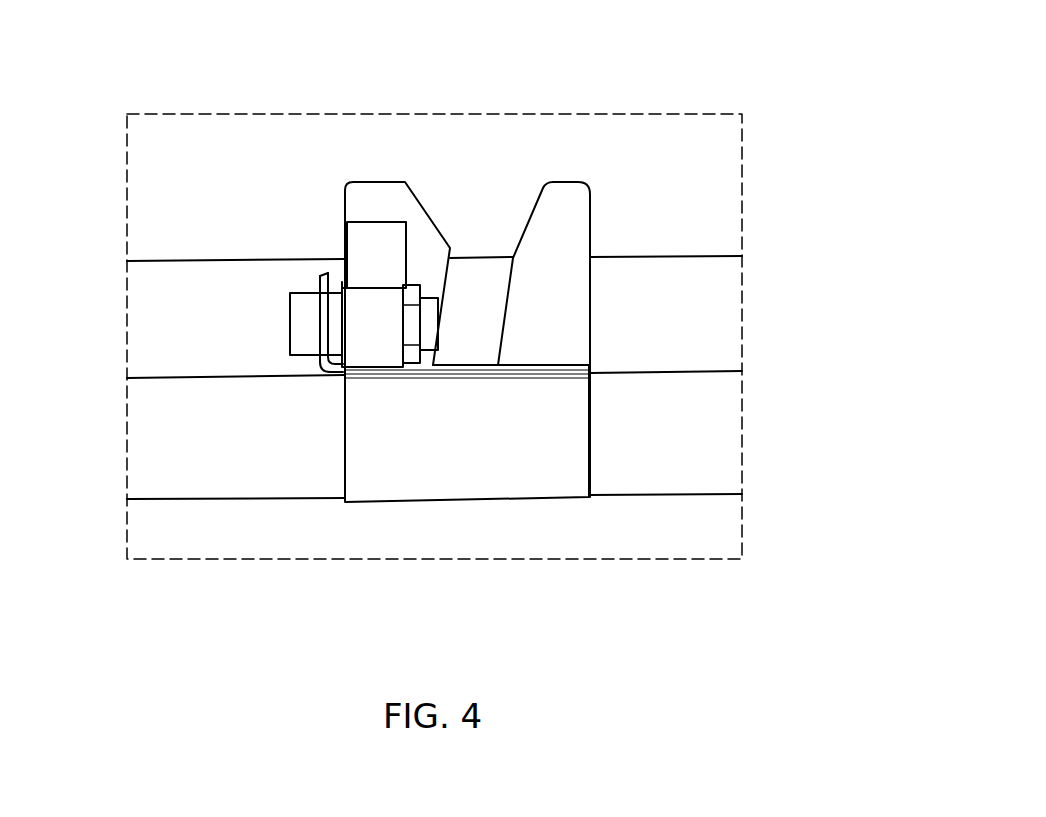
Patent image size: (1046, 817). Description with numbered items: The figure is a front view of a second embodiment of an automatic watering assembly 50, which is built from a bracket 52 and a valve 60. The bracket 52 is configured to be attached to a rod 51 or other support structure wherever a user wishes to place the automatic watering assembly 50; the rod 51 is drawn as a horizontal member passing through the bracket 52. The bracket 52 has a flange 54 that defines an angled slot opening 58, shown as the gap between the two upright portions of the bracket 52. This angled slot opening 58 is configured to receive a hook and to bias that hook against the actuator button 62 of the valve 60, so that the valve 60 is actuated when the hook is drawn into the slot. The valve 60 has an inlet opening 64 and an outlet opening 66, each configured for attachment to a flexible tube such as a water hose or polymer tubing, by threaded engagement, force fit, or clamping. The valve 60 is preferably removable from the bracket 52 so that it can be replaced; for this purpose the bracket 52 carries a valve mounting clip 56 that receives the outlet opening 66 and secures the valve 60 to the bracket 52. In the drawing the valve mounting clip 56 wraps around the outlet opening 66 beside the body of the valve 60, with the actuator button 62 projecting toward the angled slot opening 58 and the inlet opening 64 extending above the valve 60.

The automatic watering assembly 50 is at (643, 63).
The rod 51 is at (727, 472).
The bracket 52 is at (578, 453).
The flange 54 is at (557, 318).
The valve mounting clip 56 is at (320, 287).
The angled slot opening 58 is at (472, 193).
The valve 60 is at (372, 332).
The actuator button 62 is at (430, 322).
The inlet opening 64 is at (368, 220).
The outlet opening 66 is at (290, 335).